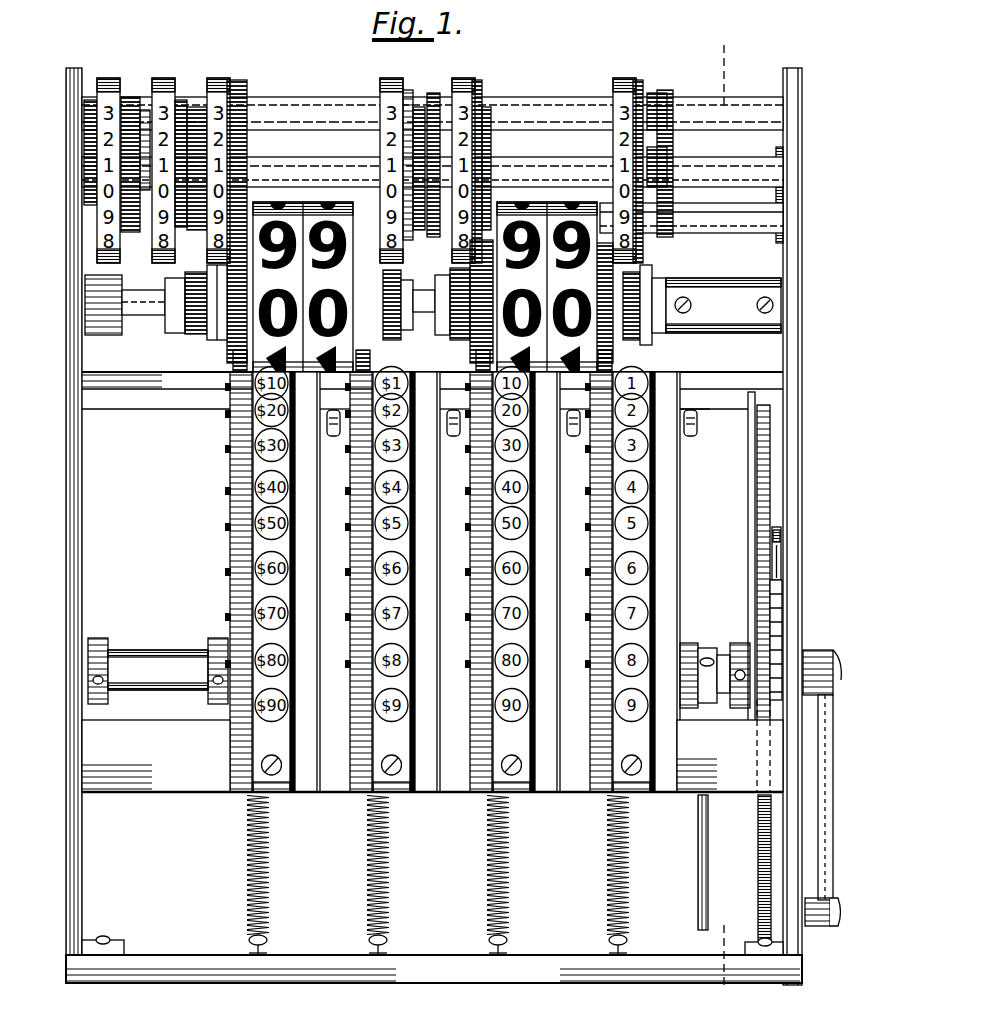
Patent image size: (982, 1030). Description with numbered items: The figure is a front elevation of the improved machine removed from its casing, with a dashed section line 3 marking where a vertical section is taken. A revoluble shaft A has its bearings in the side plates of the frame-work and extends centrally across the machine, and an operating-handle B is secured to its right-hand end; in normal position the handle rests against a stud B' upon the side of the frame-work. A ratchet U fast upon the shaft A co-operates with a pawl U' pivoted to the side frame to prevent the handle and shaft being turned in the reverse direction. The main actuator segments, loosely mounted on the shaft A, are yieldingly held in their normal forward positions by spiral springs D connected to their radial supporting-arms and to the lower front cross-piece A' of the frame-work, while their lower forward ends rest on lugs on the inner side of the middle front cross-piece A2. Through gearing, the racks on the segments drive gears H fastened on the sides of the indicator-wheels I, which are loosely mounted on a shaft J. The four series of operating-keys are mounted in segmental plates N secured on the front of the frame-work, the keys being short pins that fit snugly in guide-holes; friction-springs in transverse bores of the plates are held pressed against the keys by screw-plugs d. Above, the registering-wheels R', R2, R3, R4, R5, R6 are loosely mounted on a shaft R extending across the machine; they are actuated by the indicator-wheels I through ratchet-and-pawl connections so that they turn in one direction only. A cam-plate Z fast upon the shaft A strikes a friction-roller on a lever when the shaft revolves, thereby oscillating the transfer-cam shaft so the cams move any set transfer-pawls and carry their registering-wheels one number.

The registering-wheel R6 is at (108, 77).
The registering-wheel R5 is at (164, 77).
The registering-wheel R4 is at (230, 77).
The registering-wheel R3 is at (395, 72).
The registering-wheel R2 is at (464, 77).
The registering-wheel R' is at (633, 202).
The shaft R is at (432, 165).
The indicator-wheels I is at (318, 202).
The shaft J is at (168, 322).
The gears H is at (233, 356).
The segmental plates N is at (240, 545).
The screw-plugs d is at (226, 482).
The stud Q is at (513, 433).
The revoluble shaft A is at (419, 658).
The middle front cross-piece A2 is at (432, 746).
The lower front cross-piece A' is at (434, 982).
The spiral springs D is at (269, 880).
The cam-plate Z is at (707, 868).
The operating-handle B is at (799, 652).
The stud B' is at (823, 927).
The ratchet U is at (800, 640).
The pawl U' is at (804, 553).
The section line 3 is at (723, 517).